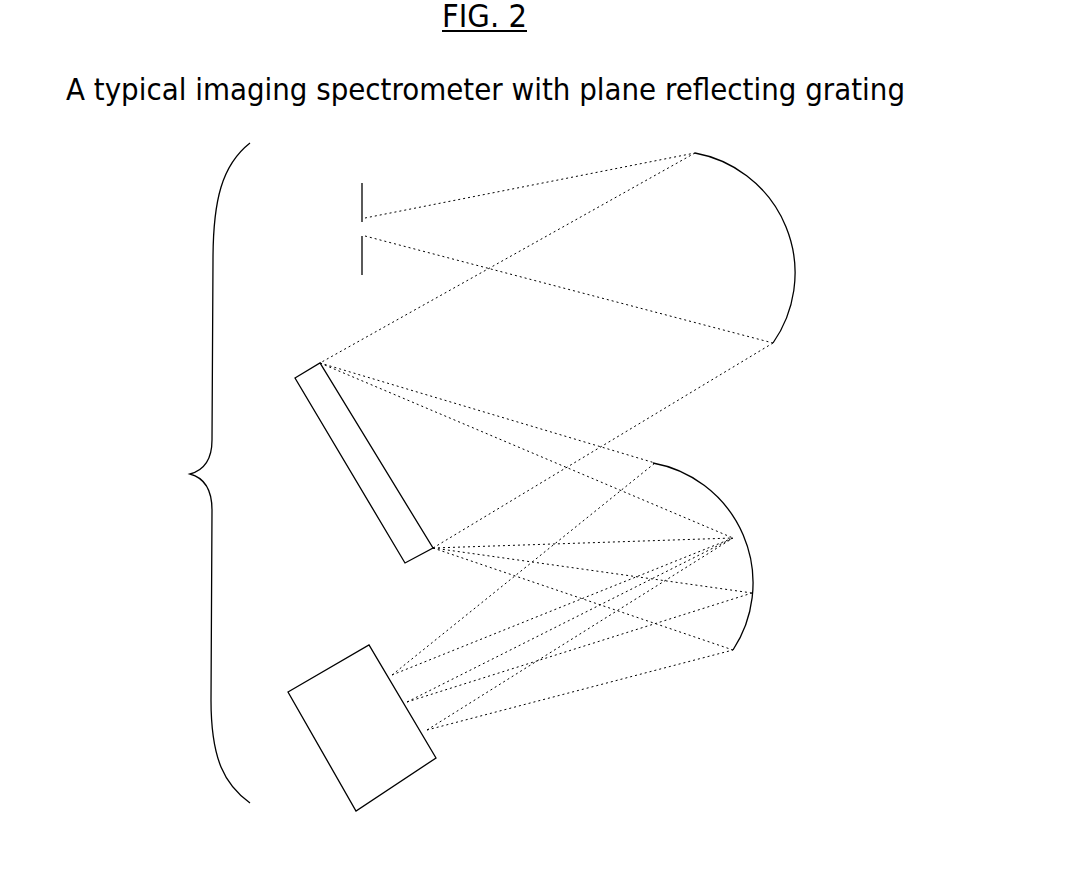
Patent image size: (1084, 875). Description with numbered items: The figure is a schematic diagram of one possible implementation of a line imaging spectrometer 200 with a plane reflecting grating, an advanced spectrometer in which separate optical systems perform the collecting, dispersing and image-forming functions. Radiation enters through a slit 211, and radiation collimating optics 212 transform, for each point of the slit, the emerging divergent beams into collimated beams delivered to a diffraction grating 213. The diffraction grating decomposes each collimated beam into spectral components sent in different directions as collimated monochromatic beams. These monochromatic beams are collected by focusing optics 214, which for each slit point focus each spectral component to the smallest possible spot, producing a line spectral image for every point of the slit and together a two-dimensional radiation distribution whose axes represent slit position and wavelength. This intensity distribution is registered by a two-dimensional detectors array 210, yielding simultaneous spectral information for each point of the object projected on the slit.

The imaging spectrometer 200 is at (195, 473).
The 2-D detectors array 210 is at (351, 728).
The slit 211 is at (315, 229).
The radiation collimating optics 212 is at (763, 248).
The diffraction grating 213 is at (349, 463).
The focusing optics 214 is at (734, 556).